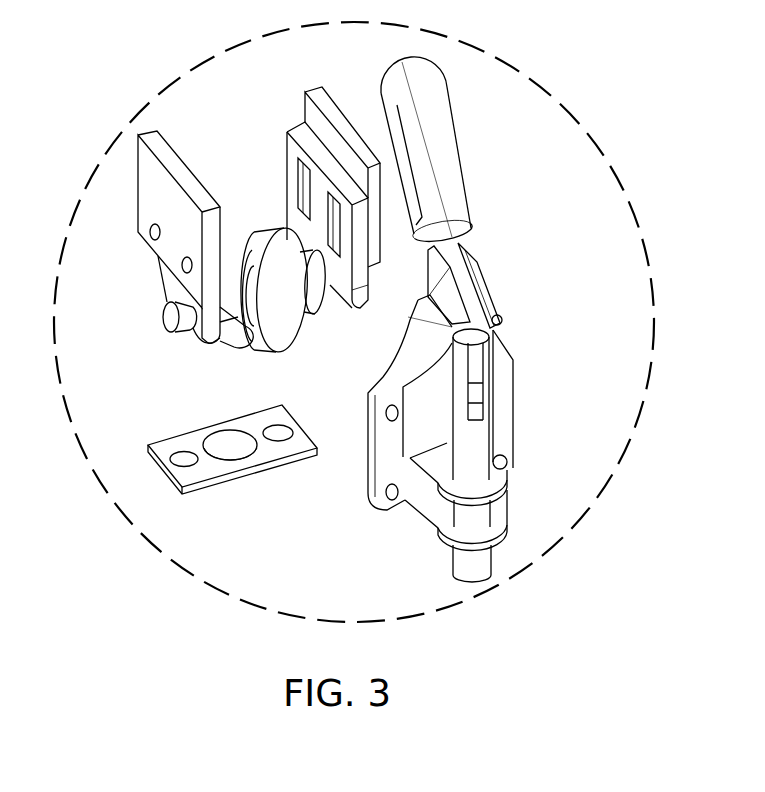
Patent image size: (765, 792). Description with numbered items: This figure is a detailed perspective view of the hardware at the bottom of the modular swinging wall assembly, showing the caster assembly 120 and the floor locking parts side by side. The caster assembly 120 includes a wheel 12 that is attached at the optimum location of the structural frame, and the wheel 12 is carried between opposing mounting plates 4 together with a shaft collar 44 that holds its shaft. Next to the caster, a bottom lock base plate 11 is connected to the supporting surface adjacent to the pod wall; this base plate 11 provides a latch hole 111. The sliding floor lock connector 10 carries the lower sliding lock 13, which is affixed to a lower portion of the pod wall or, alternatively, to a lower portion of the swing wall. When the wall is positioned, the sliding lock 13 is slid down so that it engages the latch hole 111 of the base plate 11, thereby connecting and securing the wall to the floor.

The mounting plate 4 is at (158, 152).
The wheel of a caster assembly 12 is at (256, 240).
The caster assembly 120 is at (136, 290).
The shaft collar 44 is at (318, 282).
The bottom lock base plate 11 is at (192, 443).
The latch hole 111 is at (225, 447).
The sliding floor lock connector 10 is at (515, 400).
The sliding lock 13 is at (493, 428).